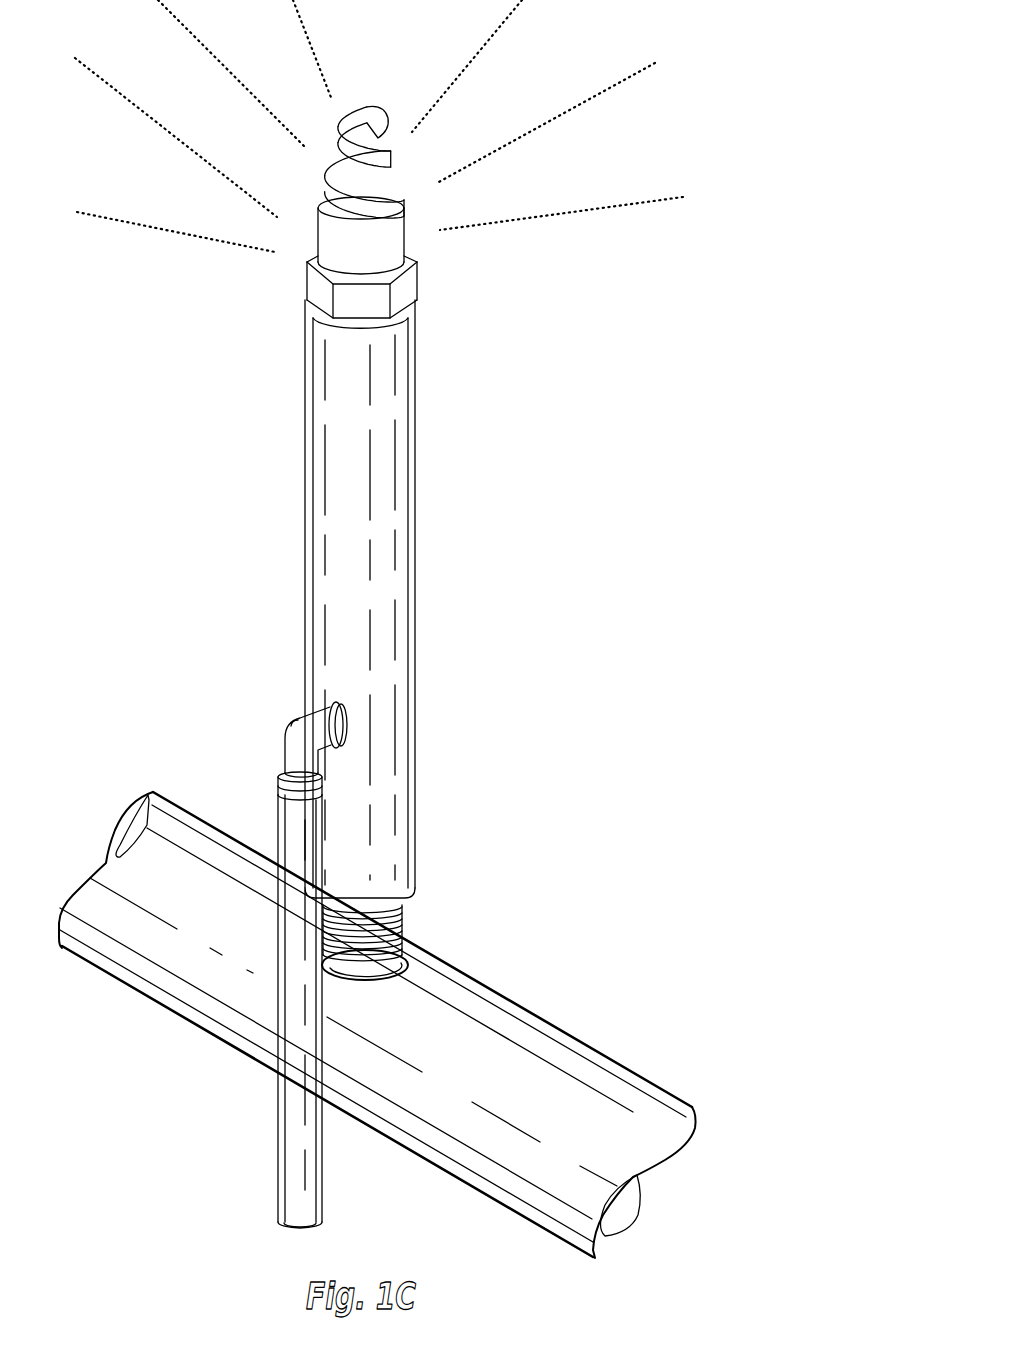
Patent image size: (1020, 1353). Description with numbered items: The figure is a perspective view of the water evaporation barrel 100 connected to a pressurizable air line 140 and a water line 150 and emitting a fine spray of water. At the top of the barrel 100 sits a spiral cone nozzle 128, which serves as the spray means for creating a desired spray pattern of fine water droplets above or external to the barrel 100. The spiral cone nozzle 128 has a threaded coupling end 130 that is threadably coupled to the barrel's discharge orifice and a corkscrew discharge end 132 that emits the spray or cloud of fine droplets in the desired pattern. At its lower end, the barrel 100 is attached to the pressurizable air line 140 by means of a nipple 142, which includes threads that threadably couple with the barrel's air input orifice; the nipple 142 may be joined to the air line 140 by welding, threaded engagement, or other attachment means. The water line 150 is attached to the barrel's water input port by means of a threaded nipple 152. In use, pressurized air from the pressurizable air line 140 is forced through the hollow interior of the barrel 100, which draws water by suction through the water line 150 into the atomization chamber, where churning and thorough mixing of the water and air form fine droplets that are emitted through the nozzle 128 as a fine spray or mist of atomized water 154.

The water evaporation barrel 100 is at (505, 579).
The spiral cone nozzle 128 is at (423, 246).
The threaded coupling end 130 is at (412, 302).
The corkscrew discharge end 132 is at (390, 177).
The pressurizable air line 140 is at (572, 1062).
The nipple 142 is at (410, 937).
The water line 150 is at (298, 1098).
The threaded nipple 152 is at (294, 723).
The atomized water 154 is at (487, 43).